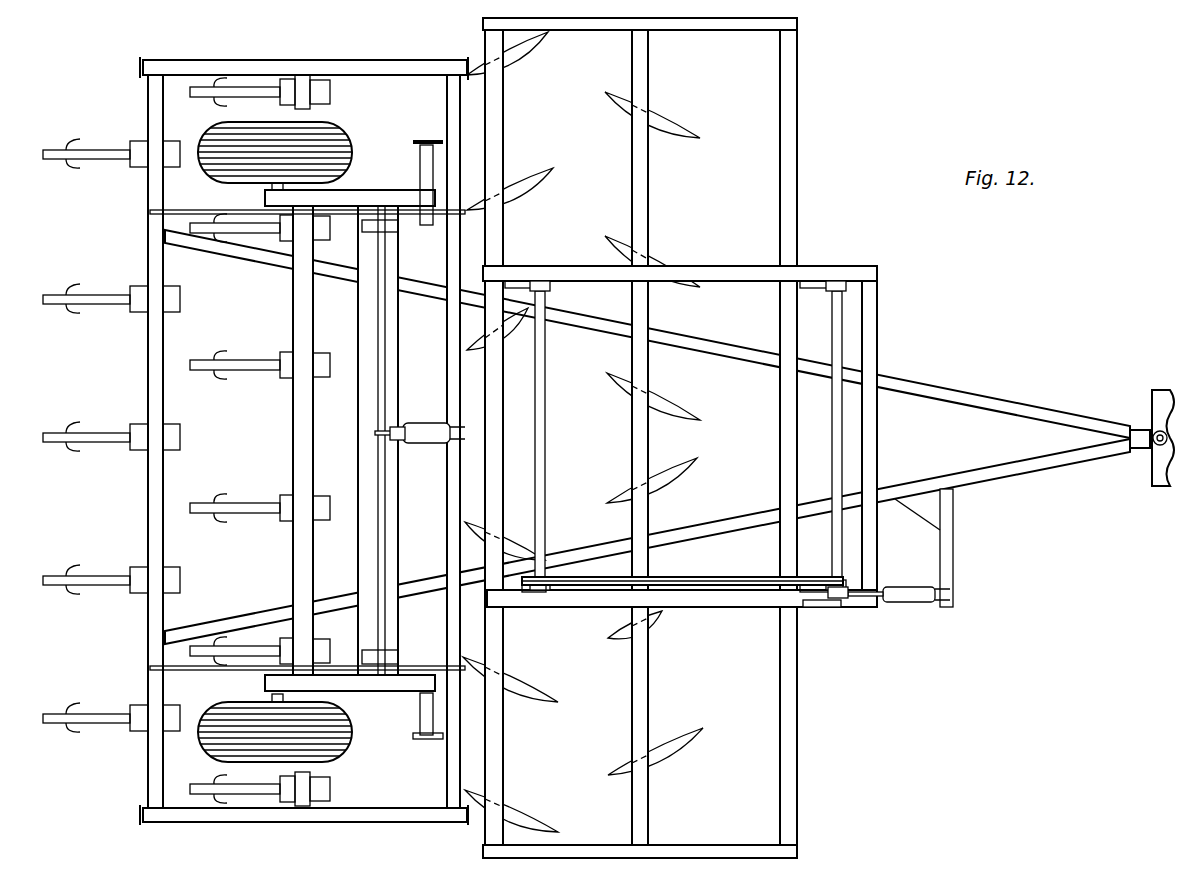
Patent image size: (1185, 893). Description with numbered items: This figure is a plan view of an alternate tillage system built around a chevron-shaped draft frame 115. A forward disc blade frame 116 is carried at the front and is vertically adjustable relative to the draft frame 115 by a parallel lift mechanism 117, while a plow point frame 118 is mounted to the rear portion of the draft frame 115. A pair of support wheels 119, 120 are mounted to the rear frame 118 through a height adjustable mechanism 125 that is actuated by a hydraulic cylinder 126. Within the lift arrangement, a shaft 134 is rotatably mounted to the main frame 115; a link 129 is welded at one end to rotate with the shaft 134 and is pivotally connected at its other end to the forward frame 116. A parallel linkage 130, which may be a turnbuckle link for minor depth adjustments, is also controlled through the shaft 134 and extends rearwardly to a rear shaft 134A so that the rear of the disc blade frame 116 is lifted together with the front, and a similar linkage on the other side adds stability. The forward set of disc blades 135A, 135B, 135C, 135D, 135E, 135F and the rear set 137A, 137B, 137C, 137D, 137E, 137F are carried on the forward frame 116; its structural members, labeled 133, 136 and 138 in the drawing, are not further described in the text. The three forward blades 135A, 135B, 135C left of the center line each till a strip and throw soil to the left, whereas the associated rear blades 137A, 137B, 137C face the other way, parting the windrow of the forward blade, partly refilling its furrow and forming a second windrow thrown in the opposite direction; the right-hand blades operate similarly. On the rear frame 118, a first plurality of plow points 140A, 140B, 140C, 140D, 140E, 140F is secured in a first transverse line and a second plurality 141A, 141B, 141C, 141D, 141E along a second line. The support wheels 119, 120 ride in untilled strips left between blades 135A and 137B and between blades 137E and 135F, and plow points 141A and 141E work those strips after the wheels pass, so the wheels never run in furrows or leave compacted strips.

The draft frame 115 is at (1095, 410).
The forward disc blade frame 116 is at (800, 102).
The parallel lift mechanism 117 is at (882, 614).
The plow point frame 118 is at (378, 60).
The support wheel 119 is at (350, 142).
The support wheel 120 is at (354, 732).
The height adjustable mechanism 125 is at (396, 546).
The hydraulic cylinder 126 is at (422, 422).
The link 129 is at (812, 608).
The parallel linkage 130 is at (780, 576).
The intermediate frame 133 is at (740, 262).
The shaft 134 is at (842, 345).
The rear shaft 134A is at (545, 439).
The disc blade 135A is at (692, 128).
The disc blade 135B is at (690, 285).
The disc blade 135C is at (698, 420).
The disc blade 135D is at (698, 462).
The disc blade 135E is at (660, 610).
The disc blade 135F is at (696, 736).
The center rail 136 is at (648, 52).
The disc blade 137A is at (540, 38).
The disc blade 137B is at (535, 178).
The disc blade 137C is at (525, 322).
The disc blade 137D is at (535, 535).
The disc blade 137E is at (540, 690).
The disc blade 137F is at (530, 805).
The front rail 138 is at (503, 116).
The plow point 140A is at (245, 84).
The plow point 140B is at (258, 237).
The plow point 140C is at (258, 374).
The plow point 140D is at (258, 517).
The plow point 140E is at (250, 640).
The plow point 140F is at (258, 797).
The plow point 141A is at (99, 150).
The plow point 141B is at (104, 294).
The plow point 141C is at (105, 432).
The plow point 141D is at (106, 575).
The plow point 141E is at (106, 713).